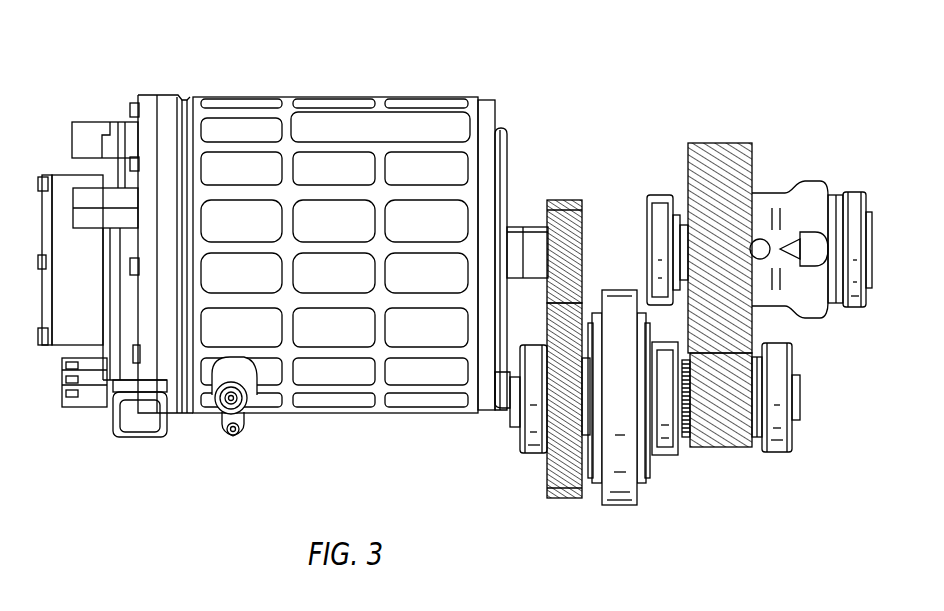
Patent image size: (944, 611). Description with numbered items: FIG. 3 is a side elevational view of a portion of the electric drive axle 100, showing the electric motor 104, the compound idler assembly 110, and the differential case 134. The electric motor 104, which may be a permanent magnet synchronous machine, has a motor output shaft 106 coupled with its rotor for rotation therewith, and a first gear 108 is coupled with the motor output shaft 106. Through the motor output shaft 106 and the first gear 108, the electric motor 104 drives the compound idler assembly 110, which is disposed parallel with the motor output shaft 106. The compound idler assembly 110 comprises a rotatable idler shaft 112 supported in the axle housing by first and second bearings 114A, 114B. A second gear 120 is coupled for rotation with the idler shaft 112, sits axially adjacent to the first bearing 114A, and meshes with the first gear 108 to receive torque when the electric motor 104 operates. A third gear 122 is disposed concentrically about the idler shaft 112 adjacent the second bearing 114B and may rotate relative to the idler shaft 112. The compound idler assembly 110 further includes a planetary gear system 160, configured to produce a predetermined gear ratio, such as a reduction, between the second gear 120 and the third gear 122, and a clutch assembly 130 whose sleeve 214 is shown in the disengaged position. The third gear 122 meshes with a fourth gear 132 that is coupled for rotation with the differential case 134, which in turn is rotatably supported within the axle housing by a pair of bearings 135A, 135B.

The electric drive axle 100 is at (125, 52).
The electric motor 104 is at (190, 96).
The motor output shaft 106 is at (517, 227).
The first gear 108 is at (565, 200).
The compound idler assembly 110 is at (500, 448).
The idler shaft 112 is at (796, 377).
The first bearing 114A is at (533, 452).
The second bearing 114B is at (792, 450).
The second gear 120 is at (567, 499).
The third gear 122 is at (725, 447).
The clutch assembly 130 is at (695, 510).
The fourth gear 132 is at (715, 143).
The differential case 134 is at (815, 172).
The first differential bearing 135A is at (663, 195).
The second differential bearing 135B is at (852, 192).
The planetary gear system 160 is at (619, 283).
The sleeve 214 is at (662, 450).